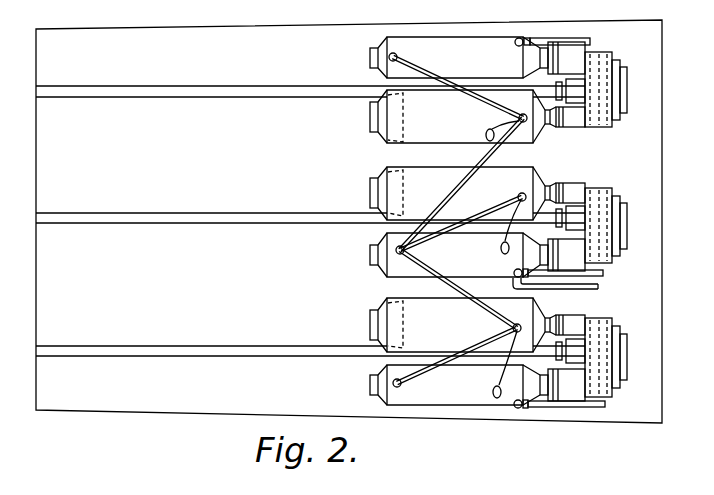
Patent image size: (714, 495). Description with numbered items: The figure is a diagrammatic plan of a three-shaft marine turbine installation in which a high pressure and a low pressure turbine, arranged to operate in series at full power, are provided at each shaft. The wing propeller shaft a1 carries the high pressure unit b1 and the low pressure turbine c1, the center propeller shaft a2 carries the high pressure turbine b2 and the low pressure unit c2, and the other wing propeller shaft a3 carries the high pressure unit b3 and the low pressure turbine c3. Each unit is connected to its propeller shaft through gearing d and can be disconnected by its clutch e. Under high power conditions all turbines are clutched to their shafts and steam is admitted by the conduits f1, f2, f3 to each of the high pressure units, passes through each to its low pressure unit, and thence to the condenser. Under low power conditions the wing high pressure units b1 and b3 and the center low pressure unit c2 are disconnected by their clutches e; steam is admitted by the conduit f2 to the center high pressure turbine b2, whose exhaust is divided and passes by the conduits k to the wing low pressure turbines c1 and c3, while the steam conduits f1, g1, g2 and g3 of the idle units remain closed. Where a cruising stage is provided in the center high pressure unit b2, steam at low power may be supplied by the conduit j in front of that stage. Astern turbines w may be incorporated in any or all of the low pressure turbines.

The propeller shaft a1 is at (70, 98).
The propeller shaft a2 is at (74, 225).
The propeller shaft a3 is at (60, 358).
The high pressure turbine b1 is at (459, 57).
The high pressure turbine b2 is at (459, 255).
The high pressure turbine b3 is at (459, 385).
The low pressure turbine c1 is at (460, 116).
The low pressure turbine c2 is at (460, 193).
The low pressure turbine c3 is at (460, 325).
The gearing d is at (600, 130).
The clutch e is at (566, 221).
The steam conduit f1 is at (590, 43).
The steam conduit f2 is at (603, 273).
The steam conduit f3 is at (605, 404).
The steam conduit g1 is at (501, 124).
The steam conduit g2 is at (510, 227).
The steam conduit g3 is at (505, 364).
The conduit j is at (597, 292).
The steam conduit k is at (487, 167).
The astern turbine w is at (404, 186).